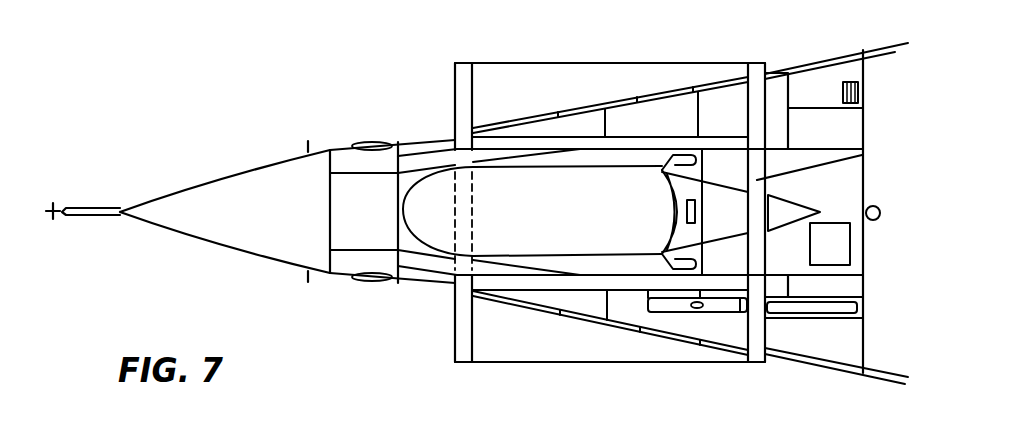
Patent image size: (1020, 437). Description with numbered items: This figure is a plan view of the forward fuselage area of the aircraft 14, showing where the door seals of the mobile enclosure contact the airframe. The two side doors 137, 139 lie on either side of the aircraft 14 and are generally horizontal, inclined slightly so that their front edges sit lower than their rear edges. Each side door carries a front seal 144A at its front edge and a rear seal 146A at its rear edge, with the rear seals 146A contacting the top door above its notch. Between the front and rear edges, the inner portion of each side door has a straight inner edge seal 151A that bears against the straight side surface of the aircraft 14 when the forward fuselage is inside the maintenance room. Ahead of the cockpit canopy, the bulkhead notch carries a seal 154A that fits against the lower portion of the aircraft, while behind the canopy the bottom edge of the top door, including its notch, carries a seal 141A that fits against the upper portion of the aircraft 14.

The aircraft 14 is at (333, 146).
The notch seal 154A is at (455, 173).
The front seal 144A is at (460, 98).
The rear seal 146A is at (767, 72).
The side door 139 is at (565, 72).
The inner edge seal 151A is at (650, 140).
The side door 137 is at (528, 348).
The bottom edge seal 141A is at (858, 155).